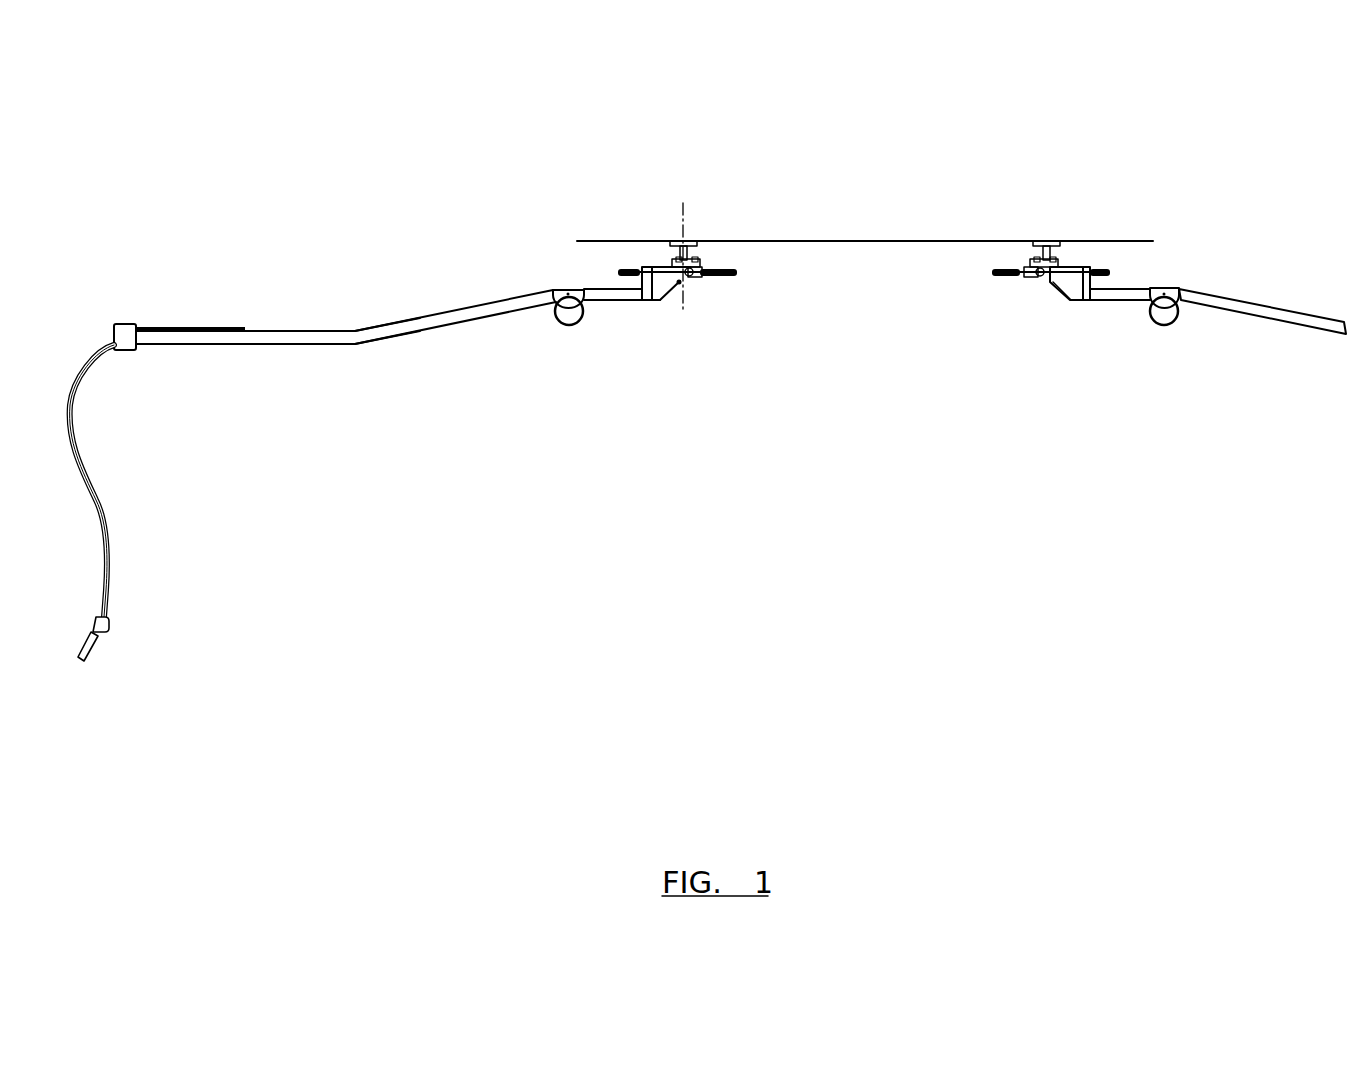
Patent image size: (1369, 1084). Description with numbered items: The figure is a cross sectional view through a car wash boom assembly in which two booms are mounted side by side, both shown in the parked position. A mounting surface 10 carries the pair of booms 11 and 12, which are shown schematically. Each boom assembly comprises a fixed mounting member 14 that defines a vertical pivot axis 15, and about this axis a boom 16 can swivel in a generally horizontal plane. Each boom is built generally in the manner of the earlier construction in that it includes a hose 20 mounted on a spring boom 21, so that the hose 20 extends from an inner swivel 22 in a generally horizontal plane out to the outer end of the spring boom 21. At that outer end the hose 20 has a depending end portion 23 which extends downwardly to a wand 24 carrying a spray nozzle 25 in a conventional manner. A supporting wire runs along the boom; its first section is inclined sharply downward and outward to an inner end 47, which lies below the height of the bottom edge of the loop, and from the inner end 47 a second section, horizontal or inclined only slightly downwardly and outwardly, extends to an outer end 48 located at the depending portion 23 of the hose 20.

The mounting surface 10 is at (1105, 241).
The boom 11 is at (1236, 222).
The boom 12 is at (487, 253).
The fixed mounting member 14 is at (697, 243).
The vertical pivot axis 15 is at (683, 302).
The boom 16 is at (403, 328).
The hose 20 is at (237, 323).
The spring boom 21 is at (190, 345).
The inner swivel 22 is at (677, 285).
The depending end portion 23 is at (110, 542).
The wand 24 is at (103, 617).
The spray nozzle 25 is at (85, 658).
The inner end 47 is at (355, 345).
The outer end 48 is at (130, 323).